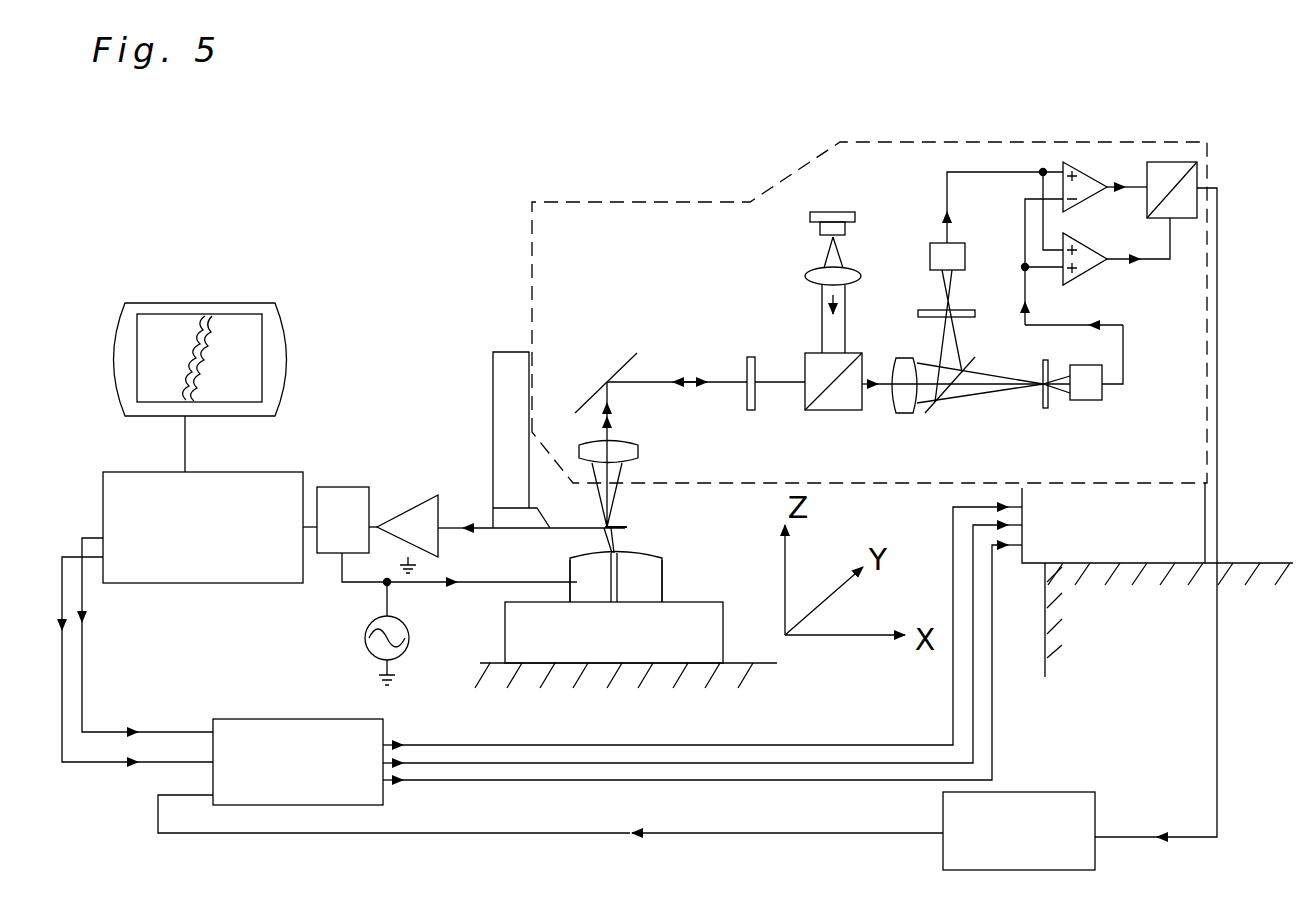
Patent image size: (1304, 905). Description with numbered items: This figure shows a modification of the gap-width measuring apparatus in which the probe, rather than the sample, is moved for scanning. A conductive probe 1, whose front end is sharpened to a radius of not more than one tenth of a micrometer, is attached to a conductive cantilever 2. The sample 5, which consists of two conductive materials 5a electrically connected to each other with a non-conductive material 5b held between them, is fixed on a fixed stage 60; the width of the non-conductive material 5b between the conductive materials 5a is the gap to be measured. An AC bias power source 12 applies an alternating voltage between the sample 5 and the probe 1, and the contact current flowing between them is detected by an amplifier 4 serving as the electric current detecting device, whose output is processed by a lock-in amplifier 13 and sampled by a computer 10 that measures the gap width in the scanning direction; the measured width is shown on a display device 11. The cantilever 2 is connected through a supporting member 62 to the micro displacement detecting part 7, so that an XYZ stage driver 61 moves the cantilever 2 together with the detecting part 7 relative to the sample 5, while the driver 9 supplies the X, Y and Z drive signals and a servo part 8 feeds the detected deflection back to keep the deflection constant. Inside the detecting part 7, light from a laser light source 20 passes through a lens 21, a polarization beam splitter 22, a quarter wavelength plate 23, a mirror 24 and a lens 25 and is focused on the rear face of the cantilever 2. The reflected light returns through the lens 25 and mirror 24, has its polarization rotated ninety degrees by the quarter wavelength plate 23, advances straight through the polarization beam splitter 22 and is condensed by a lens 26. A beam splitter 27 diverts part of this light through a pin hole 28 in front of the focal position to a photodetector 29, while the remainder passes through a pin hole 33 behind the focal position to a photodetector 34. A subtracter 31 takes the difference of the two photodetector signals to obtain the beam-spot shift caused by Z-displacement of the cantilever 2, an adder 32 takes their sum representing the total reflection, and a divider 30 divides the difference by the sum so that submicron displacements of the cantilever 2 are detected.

The conductive probe 1 is at (620, 538).
The conductive cantilever 2 is at (557, 528).
The amplifier 4 is at (410, 520).
The sample 5 is at (652, 562).
The conductive material 5a is at (593, 587).
The non-conductive material 5b is at (618, 588).
The micro displacement detecting part 7 is at (665, 200).
The servo part 8 is at (1022, 792).
The driver 9 is at (280, 719).
The computer 10 is at (282, 474).
The display device 11 is at (248, 303).
The AC bias power source 12 is at (365, 632).
The lock-in amplifier 13 is at (342, 487).
The laser light source 20 is at (810, 218).
The lens 21 is at (806, 280).
The polarization beam splitter 22 is at (840, 410).
The quarter wavelength plate 23 is at (745, 375).
The mirror 24 is at (600, 392).
The lens 25 is at (640, 453).
The lens 26 is at (905, 413).
The beam splitter 27 is at (938, 408).
The pin hole 28 is at (915, 312).
The photodetector 29 is at (948, 243).
The divider 30 is at (1183, 160).
The subtracter 31 is at (1083, 160).
The adder 32 is at (1093, 272).
The pin hole 33 is at (1046, 408).
The photodetector 34 is at (1086, 400).
The fixed stage 60 is at (678, 602).
The XYZ stage driver 61 is at (1160, 530).
The supporting member 62 is at (508, 380).